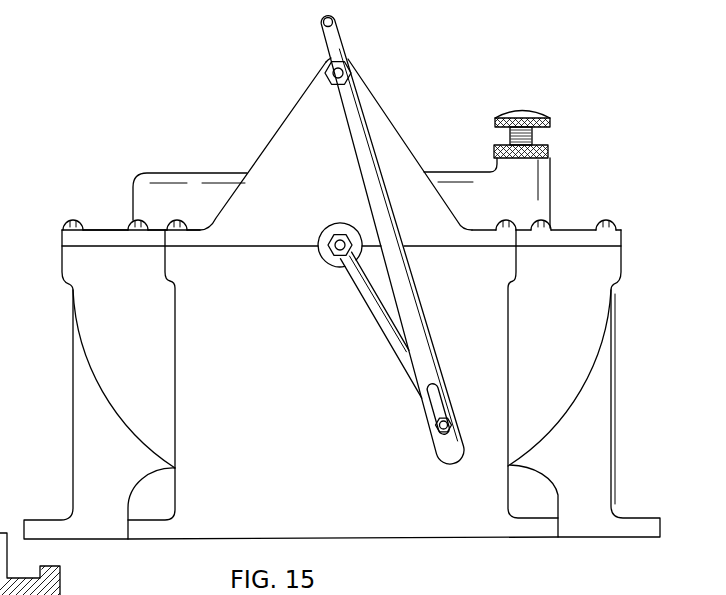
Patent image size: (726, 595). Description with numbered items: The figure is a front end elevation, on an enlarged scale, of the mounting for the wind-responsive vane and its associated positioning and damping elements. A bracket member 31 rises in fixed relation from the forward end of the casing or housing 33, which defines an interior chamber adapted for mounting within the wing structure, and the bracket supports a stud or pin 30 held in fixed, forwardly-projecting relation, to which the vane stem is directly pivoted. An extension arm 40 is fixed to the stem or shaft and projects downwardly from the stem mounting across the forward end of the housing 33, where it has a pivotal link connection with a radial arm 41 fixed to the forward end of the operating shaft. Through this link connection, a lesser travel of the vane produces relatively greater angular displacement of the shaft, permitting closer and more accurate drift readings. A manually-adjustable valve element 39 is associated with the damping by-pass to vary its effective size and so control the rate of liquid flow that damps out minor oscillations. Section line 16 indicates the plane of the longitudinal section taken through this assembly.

The support frame 16 is at (342, 27).
The stud or pin 30 is at (14, 578).
The bracket member 31 is at (267, 144).
The housing 33 is at (342, 348).
The valve element 39 is at (533, 131).
The extension arm 40 is at (364, 183).
The radial arm 41 is at (381, 317).